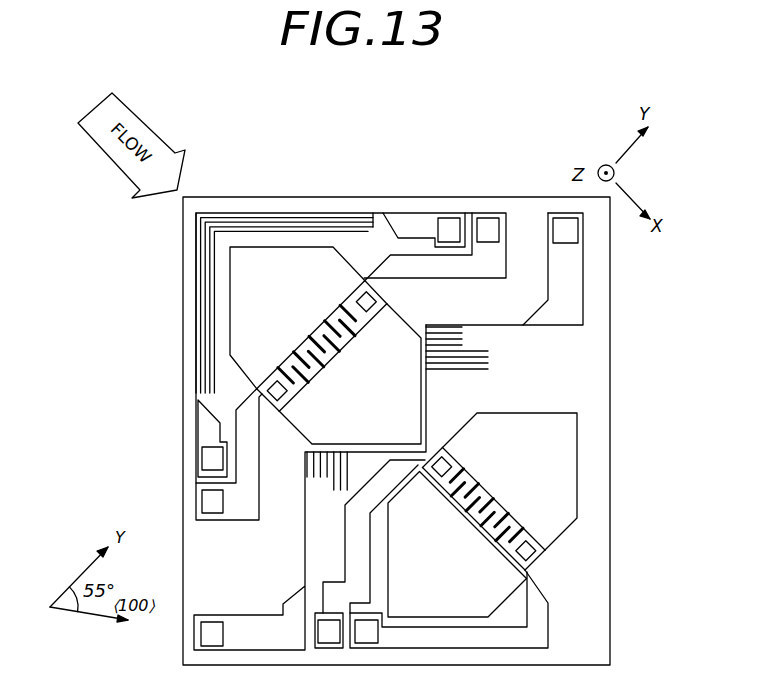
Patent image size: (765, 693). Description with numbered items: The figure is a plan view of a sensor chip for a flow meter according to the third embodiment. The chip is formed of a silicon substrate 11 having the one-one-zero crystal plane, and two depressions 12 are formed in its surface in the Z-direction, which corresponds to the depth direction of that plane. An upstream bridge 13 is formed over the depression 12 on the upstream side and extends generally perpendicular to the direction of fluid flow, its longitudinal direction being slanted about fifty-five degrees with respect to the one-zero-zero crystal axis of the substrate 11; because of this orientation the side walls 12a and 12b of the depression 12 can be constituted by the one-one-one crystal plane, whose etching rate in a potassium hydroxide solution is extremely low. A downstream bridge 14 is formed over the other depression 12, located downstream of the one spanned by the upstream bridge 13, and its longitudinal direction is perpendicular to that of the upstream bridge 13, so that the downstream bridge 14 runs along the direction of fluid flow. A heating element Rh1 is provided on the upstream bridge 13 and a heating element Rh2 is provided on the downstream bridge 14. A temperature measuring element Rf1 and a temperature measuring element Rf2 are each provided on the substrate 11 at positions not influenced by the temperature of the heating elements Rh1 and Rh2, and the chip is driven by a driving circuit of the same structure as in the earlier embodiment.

The silicon substrate 11 is at (597, 298).
The depression 12 is at (323, 255).
The side wall of the depression 12a is at (404, 318).
The side wall of the depression 12b is at (304, 424).
The upstream bridge 13 is at (340, 358).
The downstream bridge 14 is at (478, 540).
The temperature measuring element Rf1 is at (287, 213).
The temperature measuring element Rf2 is at (490, 353).
The heating element Rh1 is at (300, 343).
The heating element Rh2 is at (497, 507).